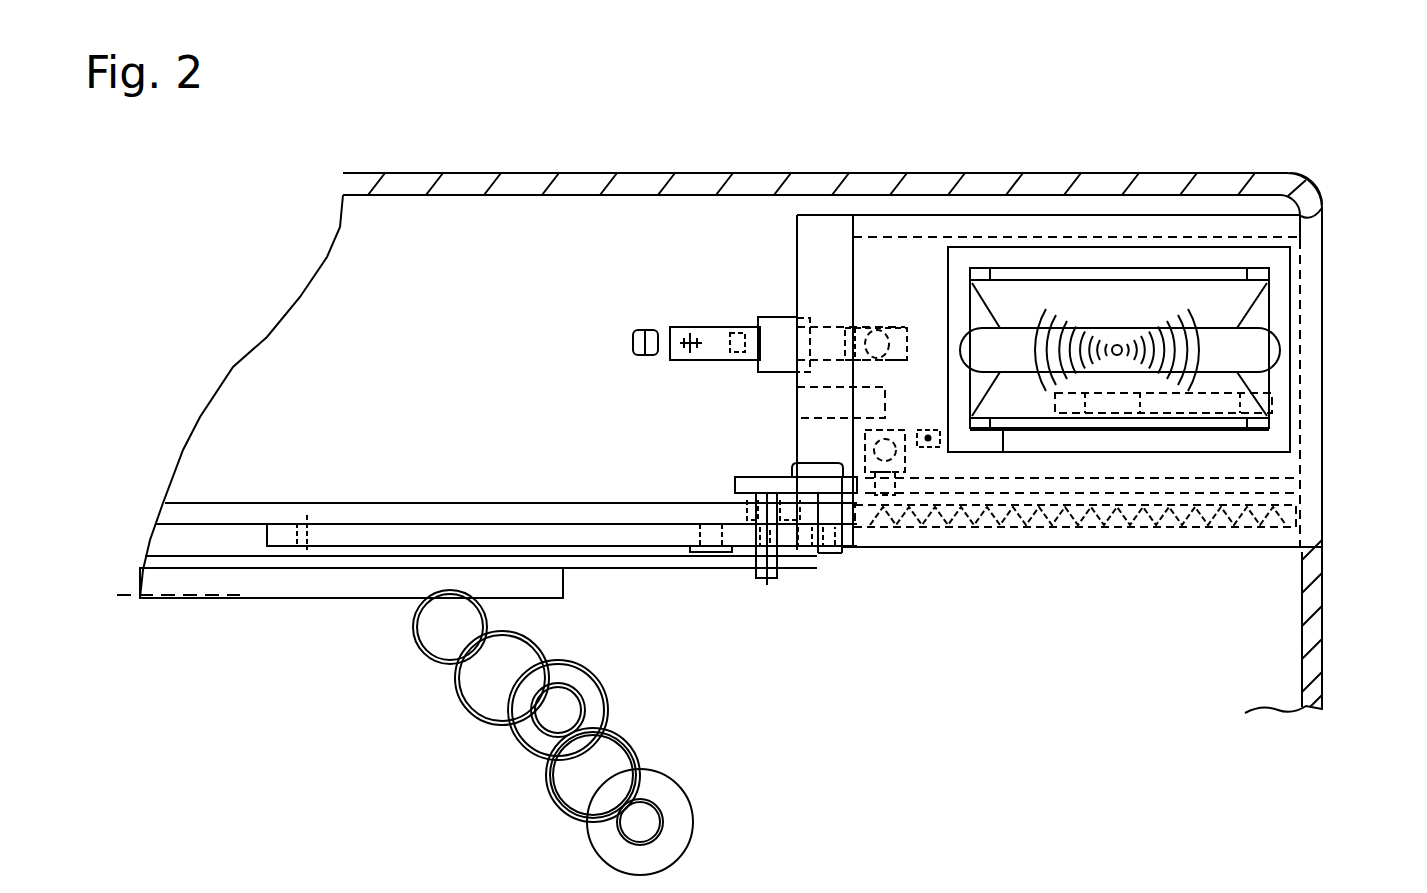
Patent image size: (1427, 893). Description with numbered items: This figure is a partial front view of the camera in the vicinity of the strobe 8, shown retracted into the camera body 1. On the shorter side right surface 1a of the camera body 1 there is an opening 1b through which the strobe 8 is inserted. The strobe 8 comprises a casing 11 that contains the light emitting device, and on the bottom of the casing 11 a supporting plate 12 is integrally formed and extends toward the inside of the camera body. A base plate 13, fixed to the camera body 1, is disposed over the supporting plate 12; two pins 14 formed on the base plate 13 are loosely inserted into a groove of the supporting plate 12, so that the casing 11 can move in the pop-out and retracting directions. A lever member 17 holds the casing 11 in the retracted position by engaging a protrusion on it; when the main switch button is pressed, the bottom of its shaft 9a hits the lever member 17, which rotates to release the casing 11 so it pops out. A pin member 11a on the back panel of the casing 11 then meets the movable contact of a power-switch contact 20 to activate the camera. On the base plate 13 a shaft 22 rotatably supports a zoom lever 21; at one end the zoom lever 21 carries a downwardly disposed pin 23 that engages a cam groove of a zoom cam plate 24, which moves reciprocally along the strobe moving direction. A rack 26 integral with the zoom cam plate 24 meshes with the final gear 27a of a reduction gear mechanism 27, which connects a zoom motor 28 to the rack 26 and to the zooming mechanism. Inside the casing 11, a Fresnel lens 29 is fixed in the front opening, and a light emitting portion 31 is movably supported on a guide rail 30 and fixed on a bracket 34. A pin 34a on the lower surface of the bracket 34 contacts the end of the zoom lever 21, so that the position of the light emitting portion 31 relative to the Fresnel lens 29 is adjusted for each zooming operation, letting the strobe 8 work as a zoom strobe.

The camera body 1 is at (569, 185).
The shorter side right surface 1a is at (1325, 601).
The opening 1b is at (1325, 226).
The strobe 8 is at (1323, 260).
The shaft 9a is at (694, 332).
The casing 11 is at (1310, 440).
The pin member 11a is at (810, 400).
The supporting plate 12 is at (510, 535).
The base plate 13 is at (336, 510).
The pins 14 is at (700, 525).
The lever member 17 is at (758, 350).
The contact 20 is at (1272, 405).
The zoom lever 21 is at (1068, 485).
The shaft 22 is at (836, 486).
The pin 23 is at (762, 582).
The zoom cam plate 24 is at (665, 565).
The rack 26 is at (307, 583).
The reduction gear mechanism 27 is at (513, 745).
The final gear 27a is at (437, 636).
The zoom motor 28 is at (683, 795).
The Fresnel lens 29 is at (1255, 320).
The guide rail 30 is at (884, 468).
The light emitting portion 31 is at (1094, 248).
The bracket 34 is at (908, 443).
The pin 34a is at (931, 449).